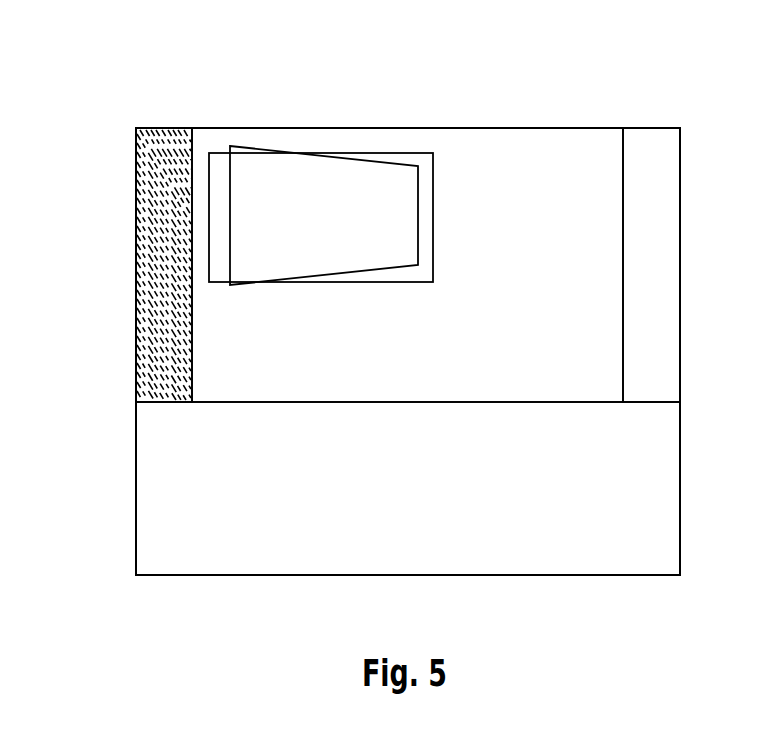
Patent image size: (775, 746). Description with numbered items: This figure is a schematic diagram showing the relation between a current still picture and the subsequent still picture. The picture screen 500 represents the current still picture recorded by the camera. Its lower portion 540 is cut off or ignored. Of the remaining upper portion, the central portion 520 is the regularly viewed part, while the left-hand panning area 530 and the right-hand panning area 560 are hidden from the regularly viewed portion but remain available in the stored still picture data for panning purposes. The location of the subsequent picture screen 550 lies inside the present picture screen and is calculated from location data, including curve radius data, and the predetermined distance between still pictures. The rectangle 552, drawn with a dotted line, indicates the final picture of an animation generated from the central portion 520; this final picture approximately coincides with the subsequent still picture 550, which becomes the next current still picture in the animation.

The picture screen 500 is at (200, 83).
The central portion 520 is at (511, 143).
The left-hand panning area 530 is at (146, 222).
The lower portion 540 is at (670, 522).
The location of the subsequent picture screen 550 is at (348, 149).
The rectangle 552 is at (386, 148).
The right-hand panning area 560 is at (670, 277).